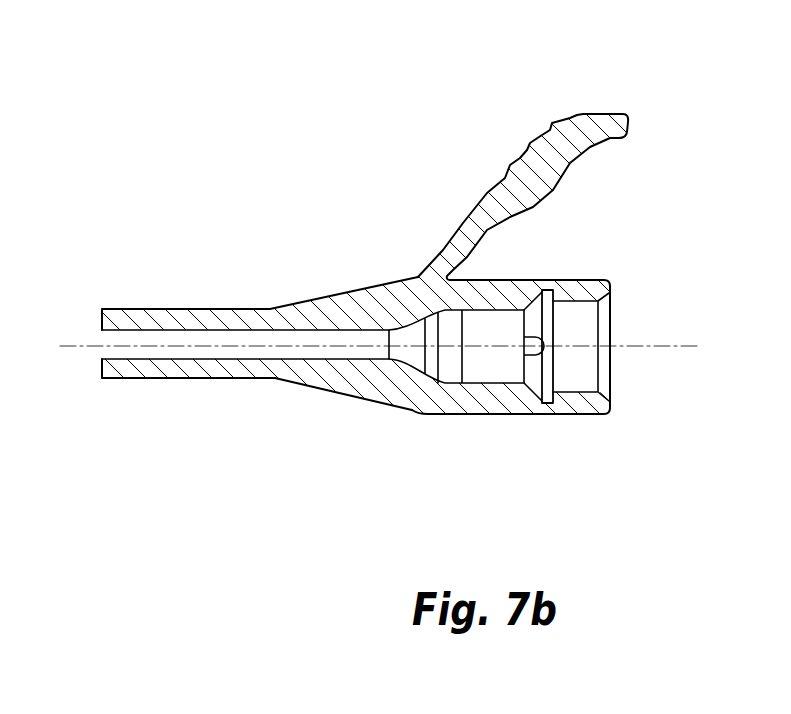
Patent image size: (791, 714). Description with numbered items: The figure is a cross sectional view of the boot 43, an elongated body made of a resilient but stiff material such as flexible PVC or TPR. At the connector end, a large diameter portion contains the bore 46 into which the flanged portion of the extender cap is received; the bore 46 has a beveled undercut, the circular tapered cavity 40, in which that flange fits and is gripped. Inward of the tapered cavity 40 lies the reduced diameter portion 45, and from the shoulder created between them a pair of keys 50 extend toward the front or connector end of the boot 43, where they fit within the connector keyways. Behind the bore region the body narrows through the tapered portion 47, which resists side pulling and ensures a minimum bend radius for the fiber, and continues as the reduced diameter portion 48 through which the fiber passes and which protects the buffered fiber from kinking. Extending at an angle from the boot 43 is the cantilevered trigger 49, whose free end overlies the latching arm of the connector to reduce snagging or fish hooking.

The circular tapered cavity 40 is at (537, 308).
The boot 43 is at (205, 412).
The reduced diameter portion 45 is at (488, 378).
The bore 46 is at (598, 300).
The tapered portion 47 is at (377, 390).
The reduced diameter portion 48 is at (181, 308).
The cantilevered trigger 49 is at (598, 122).
The keys 50 is at (524, 310).